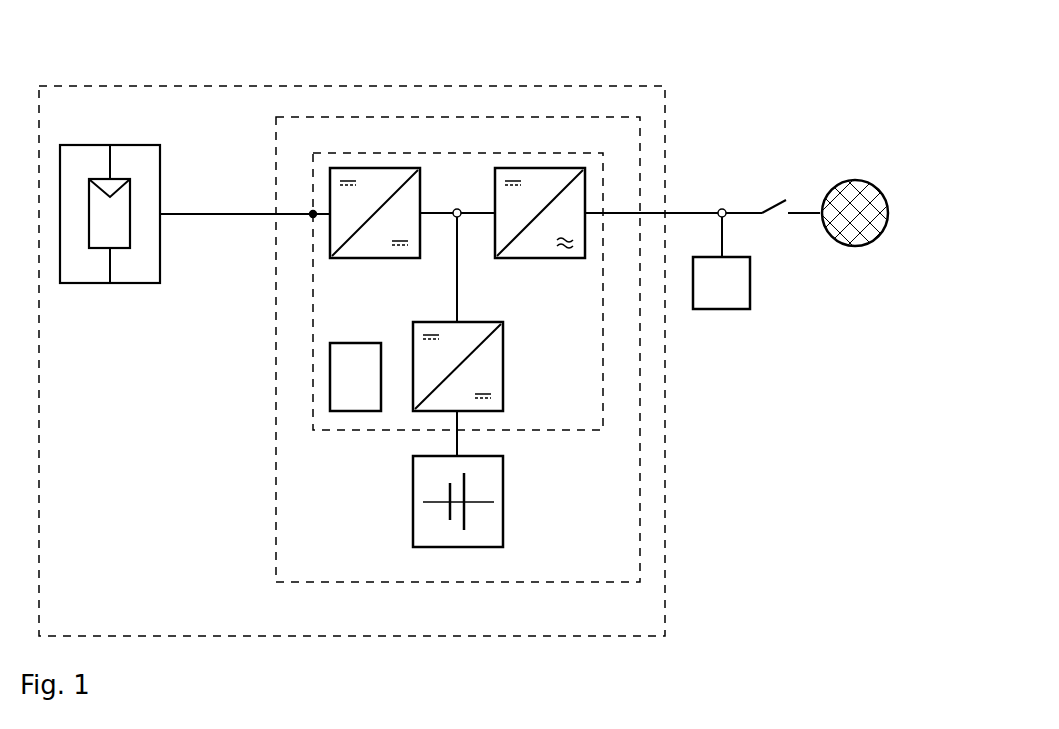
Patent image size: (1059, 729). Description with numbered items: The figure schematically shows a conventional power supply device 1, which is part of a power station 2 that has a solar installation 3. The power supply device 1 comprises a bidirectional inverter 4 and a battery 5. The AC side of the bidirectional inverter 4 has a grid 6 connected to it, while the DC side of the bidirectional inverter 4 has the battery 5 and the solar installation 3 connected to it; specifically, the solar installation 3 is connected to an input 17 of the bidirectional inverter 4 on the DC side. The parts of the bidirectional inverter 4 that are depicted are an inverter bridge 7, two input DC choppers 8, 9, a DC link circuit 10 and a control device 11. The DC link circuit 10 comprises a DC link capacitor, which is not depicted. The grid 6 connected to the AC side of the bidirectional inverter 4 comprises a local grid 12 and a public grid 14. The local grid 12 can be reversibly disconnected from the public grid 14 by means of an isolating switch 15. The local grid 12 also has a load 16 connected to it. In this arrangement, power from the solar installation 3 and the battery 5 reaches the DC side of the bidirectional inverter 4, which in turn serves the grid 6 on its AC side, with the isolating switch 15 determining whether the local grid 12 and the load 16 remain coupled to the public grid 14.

The power supply device 1 is at (643, 412).
The power station 2 is at (666, 483).
The solar installation 3 is at (129, 283).
The bidirectional inverter 4 is at (557, 432).
The battery 5 is at (503, 513).
The grid 6 is at (824, 95).
The inverter bridge 7 is at (533, 258).
The input DC chopper 8 is at (380, 258).
The input DC chopper 9 is at (503, 372).
The DC link circuit 10 is at (474, 213).
The control device 11 is at (330, 374).
The local grid 12 is at (687, 213).
The public grid 14 is at (857, 180).
The isolating switch 15 is at (775, 203).
The load 16 is at (750, 285).
The input 17 is at (312, 215).